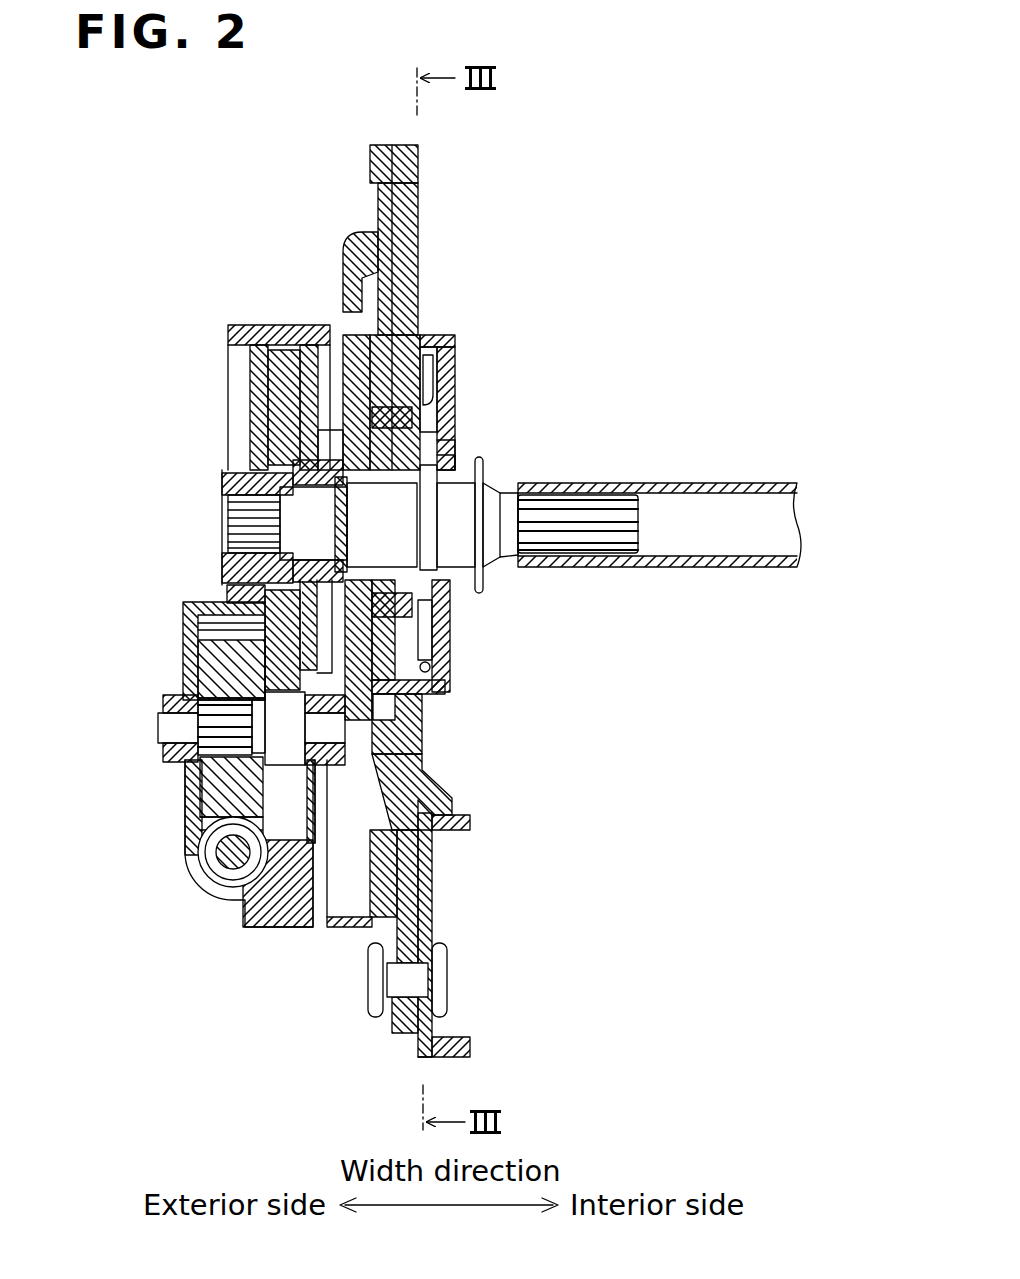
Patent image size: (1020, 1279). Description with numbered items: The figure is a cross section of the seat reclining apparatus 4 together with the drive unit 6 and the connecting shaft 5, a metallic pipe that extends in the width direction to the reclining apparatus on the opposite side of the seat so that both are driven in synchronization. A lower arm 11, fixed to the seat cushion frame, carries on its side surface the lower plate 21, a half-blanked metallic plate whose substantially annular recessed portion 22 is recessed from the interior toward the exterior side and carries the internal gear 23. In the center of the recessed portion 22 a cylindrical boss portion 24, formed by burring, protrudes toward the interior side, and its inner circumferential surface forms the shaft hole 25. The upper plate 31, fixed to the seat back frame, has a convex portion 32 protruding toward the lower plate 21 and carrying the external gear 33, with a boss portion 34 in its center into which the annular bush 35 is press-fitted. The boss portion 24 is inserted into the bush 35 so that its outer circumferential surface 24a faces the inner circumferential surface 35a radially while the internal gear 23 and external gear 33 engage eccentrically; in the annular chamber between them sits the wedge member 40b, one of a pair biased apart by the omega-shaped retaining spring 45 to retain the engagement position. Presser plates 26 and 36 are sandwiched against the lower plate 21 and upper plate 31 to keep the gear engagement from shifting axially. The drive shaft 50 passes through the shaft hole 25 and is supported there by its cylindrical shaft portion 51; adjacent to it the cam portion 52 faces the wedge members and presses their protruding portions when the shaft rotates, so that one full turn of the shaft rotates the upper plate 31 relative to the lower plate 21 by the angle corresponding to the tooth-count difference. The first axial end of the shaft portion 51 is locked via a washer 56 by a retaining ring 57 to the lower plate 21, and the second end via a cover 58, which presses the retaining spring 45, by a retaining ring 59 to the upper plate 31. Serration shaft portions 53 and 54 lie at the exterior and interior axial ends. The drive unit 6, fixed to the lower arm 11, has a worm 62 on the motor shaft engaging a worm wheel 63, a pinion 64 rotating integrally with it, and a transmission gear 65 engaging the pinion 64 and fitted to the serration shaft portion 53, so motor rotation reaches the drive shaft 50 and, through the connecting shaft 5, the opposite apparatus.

The seat reclining apparatus 4 is at (262, 198).
The connecting shaft 5 is at (738, 483).
The drive unit 6 is at (163, 832).
The lower arm 11 is at (432, 890).
The lower plate 21 is at (356, 888).
The recessed portion 22 is at (360, 392).
The internal gear 23 is at (385, 712).
The boss portion 24 is at (423, 612).
The outer circumferential surface 24a is at (380, 444).
The shaft hole 25 is at (370, 567).
The presser plate 26 is at (455, 780).
The upper plate 31 is at (418, 255).
The convex portion 32 is at (288, 328).
The external gear 33 is at (385, 690).
The boss portion 34 is at (440, 395).
The bush 35 is at (432, 400).
The inner circumferential surface 35a is at (380, 423).
The presser plate 36 is at (345, 254).
The wedge member 40b is at (432, 416).
The retaining spring 45 is at (455, 456).
The drive shaft 50 is at (505, 490).
The shaft portion 51 is at (363, 505).
The cam portion 52 is at (435, 625).
The serration shaft portion 53 is at (235, 540).
The serration shaft portion 54 is at (585, 508).
The washer 56 is at (233, 588).
The retaining ring 57 is at (268, 455).
The cover 58 is at (457, 447).
The retaining ring 59 is at (484, 580).
The worm 62 is at (222, 880).
The worm wheel 63 is at (205, 670).
The pinion 64 is at (165, 735).
The transmission gear 65 is at (250, 480).